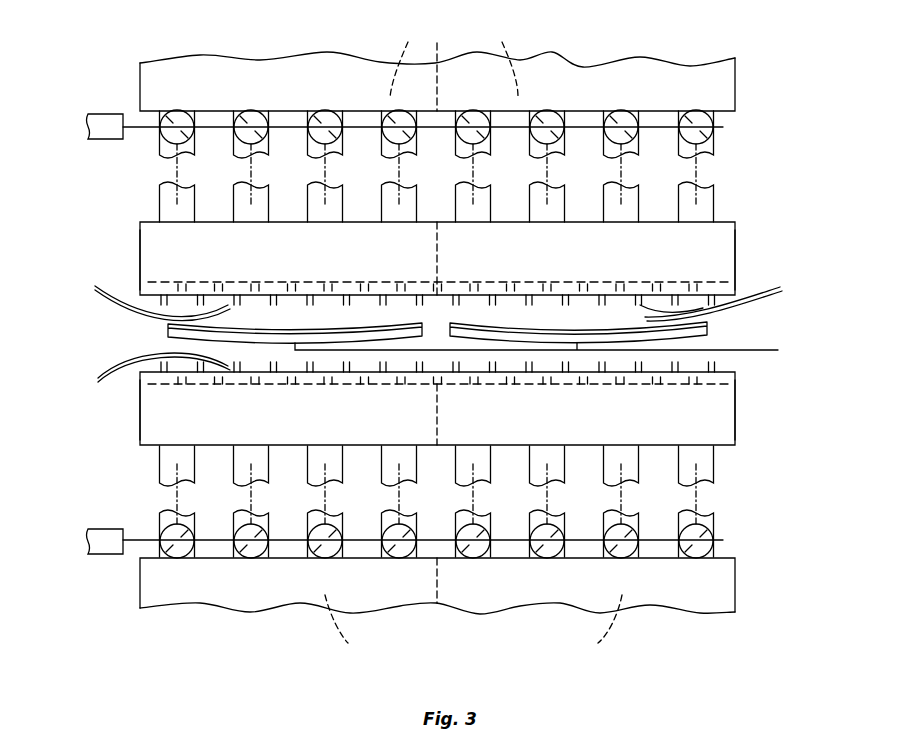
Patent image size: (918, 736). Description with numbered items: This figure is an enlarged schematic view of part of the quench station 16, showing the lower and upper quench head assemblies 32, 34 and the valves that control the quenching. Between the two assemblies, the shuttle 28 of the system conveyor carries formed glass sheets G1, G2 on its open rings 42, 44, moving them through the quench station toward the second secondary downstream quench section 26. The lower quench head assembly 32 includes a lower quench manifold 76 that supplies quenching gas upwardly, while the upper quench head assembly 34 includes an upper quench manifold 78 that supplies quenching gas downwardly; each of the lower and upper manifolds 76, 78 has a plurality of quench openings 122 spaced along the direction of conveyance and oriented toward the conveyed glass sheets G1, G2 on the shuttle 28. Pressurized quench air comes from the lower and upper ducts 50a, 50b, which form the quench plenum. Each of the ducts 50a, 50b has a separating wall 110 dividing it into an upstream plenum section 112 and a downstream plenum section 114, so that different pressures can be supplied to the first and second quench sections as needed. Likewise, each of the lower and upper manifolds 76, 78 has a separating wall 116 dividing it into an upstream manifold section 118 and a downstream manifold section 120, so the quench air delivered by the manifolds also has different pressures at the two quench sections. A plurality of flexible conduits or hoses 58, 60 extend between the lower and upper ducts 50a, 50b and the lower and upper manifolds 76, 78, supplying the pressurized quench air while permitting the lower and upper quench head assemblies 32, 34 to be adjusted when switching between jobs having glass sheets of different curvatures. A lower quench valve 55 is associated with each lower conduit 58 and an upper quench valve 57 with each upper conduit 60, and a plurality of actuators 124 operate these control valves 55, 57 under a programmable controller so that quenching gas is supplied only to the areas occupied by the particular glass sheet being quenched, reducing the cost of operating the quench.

The quench station 16 is at (745, 735).
The second secondary downstream quench section 26 is at (476, 55).
The shuttle 28 is at (760, 350).
The lower quench head assembly 32 is at (492, 404).
The upper quench head assembly 34 is at (489, 257).
The open ring 42 is at (195, 340).
The open ring 44 is at (683, 338).
The lower duct 50a is at (738, 571).
The upper duct 50b is at (738, 87).
The lower quench valve 55 is at (303, 552).
The upper quench valve 57 is at (307, 110).
The lower flexible conduit 58 is at (235, 470).
The upper flexible conduit 60 is at (235, 198).
The lower quench manifold 76 is at (738, 420).
The upper quench manifold 78 is at (738, 248).
The separating wall 110 is at (437, 83).
The upstream plenum section 112 is at (377, 333).
The downstream plenum section 114 is at (557, 335).
The separating wall 116 is at (440, 262).
The upstream manifold section 118 is at (153, 253).
The downstream manifold section 120 is at (715, 237).
The quench openings 122 is at (672, 363).
The actuator 124 is at (108, 114).
The formed glass sheet G1 is at (373, 326).
The formed glass sheet G2 is at (500, 326).